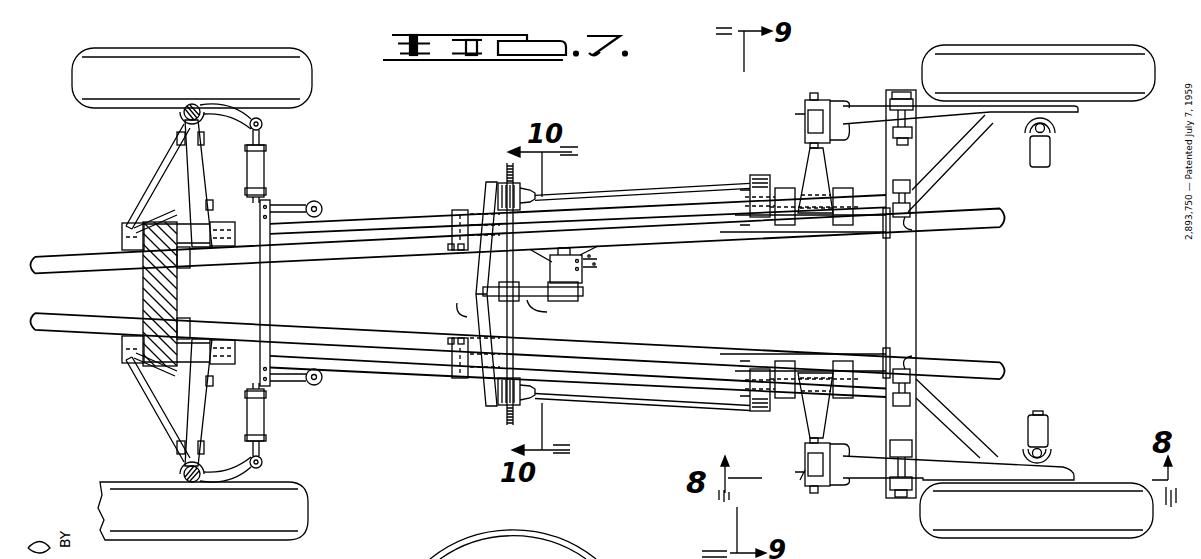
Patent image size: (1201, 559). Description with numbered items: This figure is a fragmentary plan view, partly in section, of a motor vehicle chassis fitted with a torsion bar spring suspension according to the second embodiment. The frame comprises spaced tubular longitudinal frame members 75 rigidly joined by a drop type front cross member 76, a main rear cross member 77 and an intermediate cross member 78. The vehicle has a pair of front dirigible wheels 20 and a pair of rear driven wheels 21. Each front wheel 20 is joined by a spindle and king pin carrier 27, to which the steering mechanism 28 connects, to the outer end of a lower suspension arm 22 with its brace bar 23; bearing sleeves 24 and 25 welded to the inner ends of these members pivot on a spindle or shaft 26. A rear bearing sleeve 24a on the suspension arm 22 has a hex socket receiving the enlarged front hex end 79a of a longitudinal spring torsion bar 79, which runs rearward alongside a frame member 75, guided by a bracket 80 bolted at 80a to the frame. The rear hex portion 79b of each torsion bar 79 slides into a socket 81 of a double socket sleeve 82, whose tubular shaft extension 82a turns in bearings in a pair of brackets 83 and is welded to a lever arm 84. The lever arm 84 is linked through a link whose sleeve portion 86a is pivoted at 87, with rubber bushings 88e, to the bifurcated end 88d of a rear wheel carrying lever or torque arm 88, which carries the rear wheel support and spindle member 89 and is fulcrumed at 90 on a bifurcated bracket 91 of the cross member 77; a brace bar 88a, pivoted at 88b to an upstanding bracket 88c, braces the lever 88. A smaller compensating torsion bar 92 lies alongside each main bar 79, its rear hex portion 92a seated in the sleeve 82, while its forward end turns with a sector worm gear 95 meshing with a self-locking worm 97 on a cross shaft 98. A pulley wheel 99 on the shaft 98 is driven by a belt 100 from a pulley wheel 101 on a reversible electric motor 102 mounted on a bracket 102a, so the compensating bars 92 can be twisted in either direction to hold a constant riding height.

The front dirigible wheel 20 is at (292, 78).
The rear driven wheel 21 is at (1120, 102).
The lower suspension arm 22 is at (198, 162).
The brace bar 23 is at (156, 178).
The bearing sleeve 24 is at (183, 263).
The rear socket member or bearing sleeve 24a is at (232, 250).
The bearing sleeve 25 is at (122, 236).
The spindle or shaft 26 is at (176, 204).
The spindle and king pin mounting or carrier 27 is at (180, 117).
The steering mechanism 28 is at (268, 184).
The longitudinal frame member 75 is at (333, 328).
The drop type front cross member 76 is at (142, 290).
The main rear cross member 77 is at (905, 298).
The intermediate cross member 78 is at (476, 315).
The longitudinal spring torsion bar 79 is at (360, 224).
The enlarged front hex end 79a is at (233, 216).
The enlarged hex portion 79b is at (740, 226).
The bracket 80 is at (458, 210).
The bolts 80a is at (452, 252).
The socket 81 is at (778, 362).
The double socket sleeve 82 is at (785, 230).
The tubular shaft extension 82a is at (862, 225).
The bracket 83 is at (785, 188).
The lever arm 84 is at (830, 158).
The sleeve portion 86a is at (803, 120).
The pivotal connection 87 is at (814, 93).
The rear wheel carrying lever or torque arm 88 is at (862, 106).
The brace bar 88a is at (945, 173).
The pivot 88b is at (905, 180).
The upstanding bifurcated bracket 88c is at (905, 218).
The forward bifurcated end 88d is at (832, 100).
The rubber bushings 88e is at (805, 485).
The rear wheel support and spindle member 89 is at (1080, 112).
The fulcrum pivot 90 is at (902, 92).
The bifurcated bracket 91 is at (912, 445).
The compensating torsion bar 92 is at (645, 192).
The enlarged hex portion 92a is at (756, 180).
The sector worm gear 95 is at (507, 170).
The worm 97 is at (535, 195).
The cross shaft 98 is at (514, 345).
The pulley wheel 99 is at (520, 300).
The driving belt 100 is at (560, 302).
The pulley wheel 101 is at (580, 298).
The reversible electric motor 102 is at (585, 275).
The bracket 102a is at (548, 245).